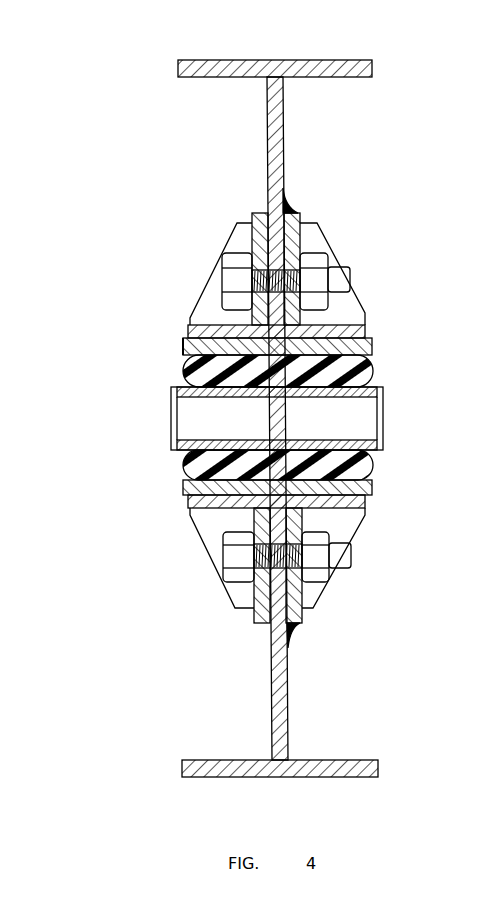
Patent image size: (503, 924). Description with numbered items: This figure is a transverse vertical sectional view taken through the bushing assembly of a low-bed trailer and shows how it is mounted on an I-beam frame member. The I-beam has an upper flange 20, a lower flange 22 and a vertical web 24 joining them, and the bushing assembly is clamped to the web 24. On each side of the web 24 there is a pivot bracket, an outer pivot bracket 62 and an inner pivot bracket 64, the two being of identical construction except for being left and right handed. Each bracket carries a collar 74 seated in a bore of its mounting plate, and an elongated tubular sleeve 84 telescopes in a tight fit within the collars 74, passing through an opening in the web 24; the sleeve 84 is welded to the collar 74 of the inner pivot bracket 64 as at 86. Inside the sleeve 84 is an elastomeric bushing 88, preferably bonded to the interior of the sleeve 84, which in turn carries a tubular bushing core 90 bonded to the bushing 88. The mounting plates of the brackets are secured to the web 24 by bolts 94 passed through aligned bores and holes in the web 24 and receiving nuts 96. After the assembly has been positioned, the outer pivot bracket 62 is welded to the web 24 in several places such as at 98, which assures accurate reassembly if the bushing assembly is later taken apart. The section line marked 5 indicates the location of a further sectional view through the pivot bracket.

The upper flange 20 is at (320, 50).
The lower flange 22 is at (327, 779).
The web 24 is at (283, 109).
The outer pivot bracket 62 is at (368, 310).
The inner pivot bracket 64 is at (172, 274).
The collar 74 is at (366, 330).
The tubular sleeve 84 is at (373, 348).
The weld 86 is at (186, 337).
The elastomeric bushing 88 is at (374, 371).
The bushing core 90 is at (383, 427).
The bolts 94 is at (196, 272).
The nuts 96 is at (382, 269).
The weld 98 is at (291, 206).
The section line 5- 5 is at (90, 427).